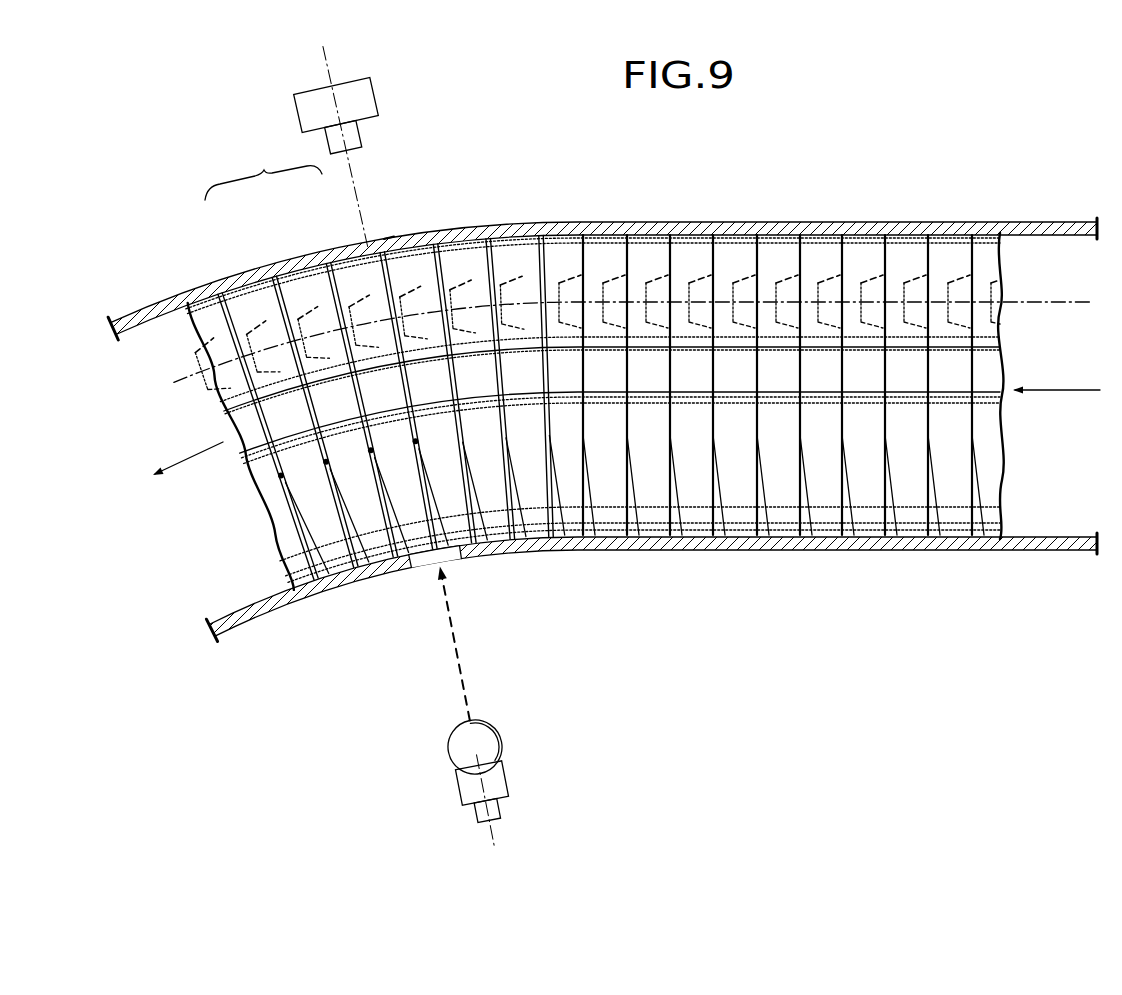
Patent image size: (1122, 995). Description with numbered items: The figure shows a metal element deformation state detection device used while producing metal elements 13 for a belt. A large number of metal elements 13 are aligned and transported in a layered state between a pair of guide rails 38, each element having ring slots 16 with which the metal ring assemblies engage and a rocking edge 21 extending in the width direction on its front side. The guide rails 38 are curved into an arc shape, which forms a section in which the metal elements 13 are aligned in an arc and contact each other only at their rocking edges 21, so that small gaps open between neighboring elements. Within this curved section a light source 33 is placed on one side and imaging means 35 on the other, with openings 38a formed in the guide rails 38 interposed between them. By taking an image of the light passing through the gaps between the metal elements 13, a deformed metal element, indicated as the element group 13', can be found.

The metal element 13 is at (390, 372).
The blade group 13' is at (263, 173).
The ring slot 16 is at (383, 394).
The rocking edge 21 is at (415, 441).
The light source 33 is at (455, 751).
The imaging means 35 is at (372, 97).
The guide rail 38 is at (659, 213).
The opening 38a is at (386, 237).